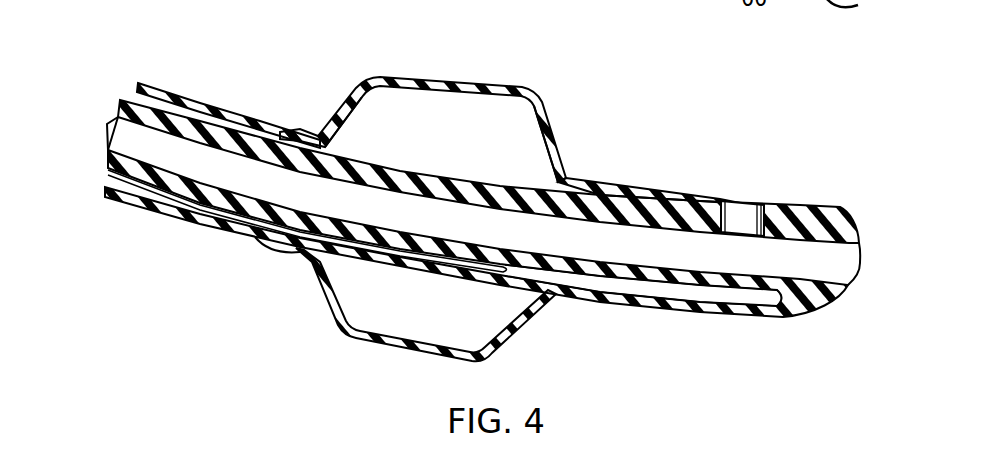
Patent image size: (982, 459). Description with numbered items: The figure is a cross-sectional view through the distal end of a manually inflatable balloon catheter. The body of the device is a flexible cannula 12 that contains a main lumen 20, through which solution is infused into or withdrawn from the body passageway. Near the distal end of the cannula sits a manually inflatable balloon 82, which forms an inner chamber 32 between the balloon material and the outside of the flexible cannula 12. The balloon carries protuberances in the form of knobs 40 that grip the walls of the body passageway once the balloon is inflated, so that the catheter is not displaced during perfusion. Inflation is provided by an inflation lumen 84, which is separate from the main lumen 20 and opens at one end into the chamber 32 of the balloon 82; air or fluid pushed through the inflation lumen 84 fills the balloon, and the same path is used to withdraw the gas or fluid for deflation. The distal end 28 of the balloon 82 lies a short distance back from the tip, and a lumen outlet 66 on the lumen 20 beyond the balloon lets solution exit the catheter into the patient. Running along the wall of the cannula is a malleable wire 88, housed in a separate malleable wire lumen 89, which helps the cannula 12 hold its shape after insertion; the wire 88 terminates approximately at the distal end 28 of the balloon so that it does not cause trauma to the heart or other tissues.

The flexible cannula 12 is at (143, 204).
The lumen 20 is at (227, 170).
The distal end of balloon 28 is at (550, 124).
The inner chamber 32 is at (493, 133).
The knobs 40 is at (440, 86).
The lumen outlet 66 is at (735, 220).
The manually inflatable balloon 82 is at (378, 108).
The inflation lumen 84 is at (167, 110).
The malleable wire 88 is at (497, 270).
The malleable wire lumen 89 is at (685, 292).